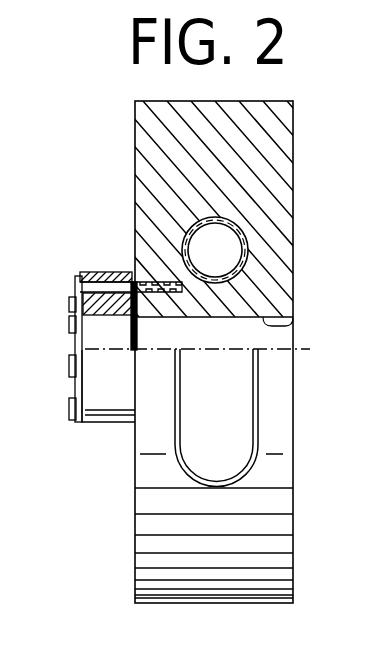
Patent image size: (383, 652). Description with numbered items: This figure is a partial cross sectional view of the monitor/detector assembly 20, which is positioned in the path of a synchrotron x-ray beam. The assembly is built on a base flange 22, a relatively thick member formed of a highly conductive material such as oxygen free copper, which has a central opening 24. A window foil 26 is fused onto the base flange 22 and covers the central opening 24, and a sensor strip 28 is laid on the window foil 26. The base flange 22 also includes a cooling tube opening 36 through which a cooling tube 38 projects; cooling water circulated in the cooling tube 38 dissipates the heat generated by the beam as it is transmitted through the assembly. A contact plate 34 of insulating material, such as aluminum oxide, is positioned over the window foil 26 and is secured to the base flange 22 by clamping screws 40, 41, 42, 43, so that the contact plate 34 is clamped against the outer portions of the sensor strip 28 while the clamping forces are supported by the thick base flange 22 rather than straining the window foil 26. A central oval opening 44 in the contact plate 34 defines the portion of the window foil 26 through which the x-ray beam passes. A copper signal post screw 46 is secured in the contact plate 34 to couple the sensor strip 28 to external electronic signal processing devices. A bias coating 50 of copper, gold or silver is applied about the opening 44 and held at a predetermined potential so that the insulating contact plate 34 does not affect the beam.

The monitor/detector assembly 20 is at (357, 523).
The base flange 22 is at (135, 123).
The central opening 24 is at (293, 322).
The window foil 26 is at (136, 352).
The sensor strip 28 is at (130, 352).
The contact plate 34 is at (100, 272).
The cooling tube opening 36 is at (250, 237).
The cooling tube 38 is at (232, 222).
The clamping screw 40 is at (77, 278).
The clamping screw 41 is at (70, 325).
The clamping screw 42 is at (70, 364).
The clamping screw 43 is at (72, 412).
The central oval opening 44 is at (110, 330).
The signal post screw 46 is at (70, 306).
The bias coating 50 is at (138, 325).